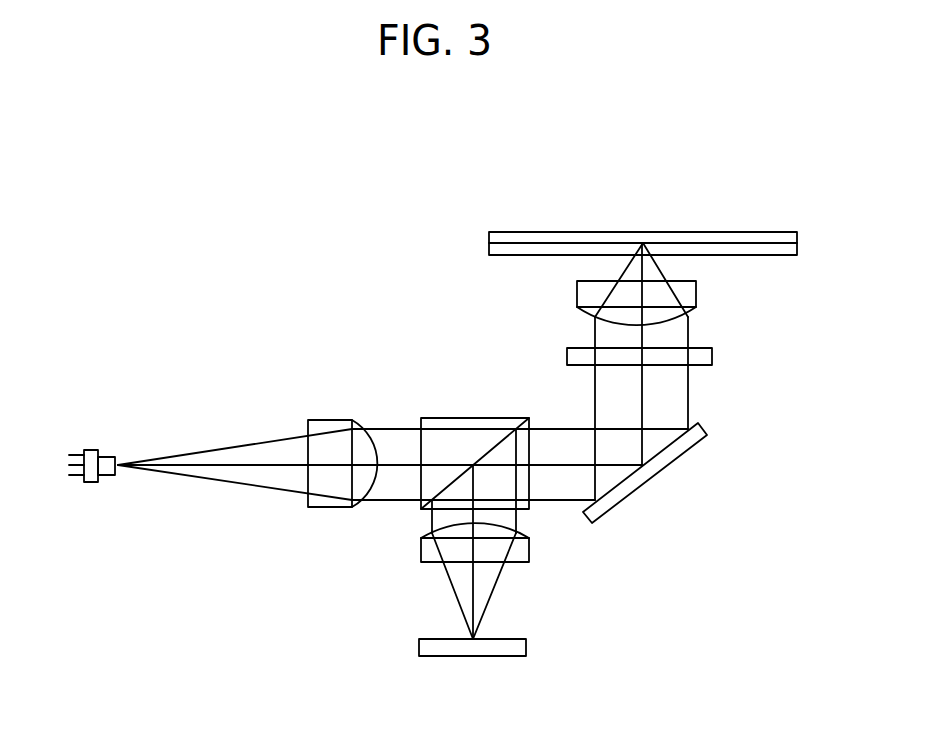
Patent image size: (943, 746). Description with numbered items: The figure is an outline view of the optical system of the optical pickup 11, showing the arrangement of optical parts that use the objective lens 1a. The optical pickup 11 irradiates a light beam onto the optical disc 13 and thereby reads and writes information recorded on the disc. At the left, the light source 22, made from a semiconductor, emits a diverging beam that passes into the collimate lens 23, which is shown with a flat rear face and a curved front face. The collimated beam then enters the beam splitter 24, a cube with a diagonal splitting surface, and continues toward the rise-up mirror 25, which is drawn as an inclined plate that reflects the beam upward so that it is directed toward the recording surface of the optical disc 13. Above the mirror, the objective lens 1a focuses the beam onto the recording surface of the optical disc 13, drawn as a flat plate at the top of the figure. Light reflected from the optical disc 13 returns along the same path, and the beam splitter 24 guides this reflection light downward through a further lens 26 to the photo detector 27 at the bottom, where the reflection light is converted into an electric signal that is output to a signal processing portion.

The optical pickup 11 is at (263, 277).
The optical disc 13 is at (530, 232).
The objective lens 1a is at (697, 298).
The light source 22 is at (96, 450).
The collimate lens 23 is at (335, 420).
The beam splitter 24 is at (477, 418).
The rise-up mirror 25 is at (653, 475).
The detection lens 26 is at (529, 550).
The photo detector 27 is at (527, 648).